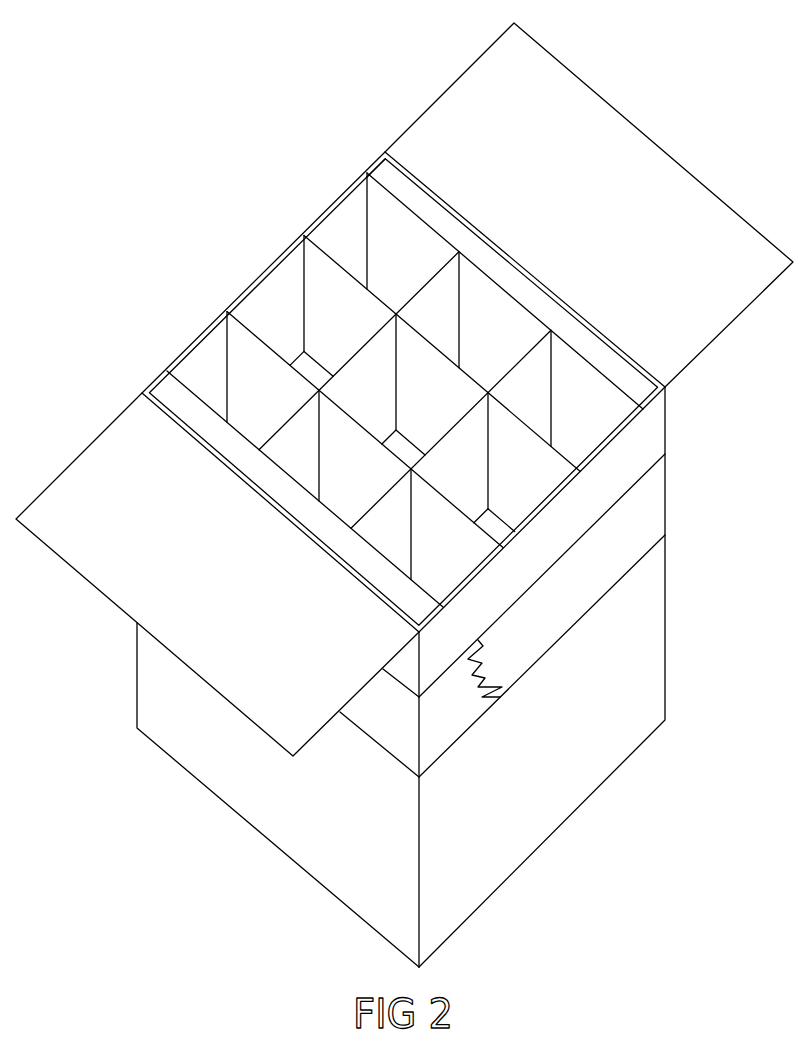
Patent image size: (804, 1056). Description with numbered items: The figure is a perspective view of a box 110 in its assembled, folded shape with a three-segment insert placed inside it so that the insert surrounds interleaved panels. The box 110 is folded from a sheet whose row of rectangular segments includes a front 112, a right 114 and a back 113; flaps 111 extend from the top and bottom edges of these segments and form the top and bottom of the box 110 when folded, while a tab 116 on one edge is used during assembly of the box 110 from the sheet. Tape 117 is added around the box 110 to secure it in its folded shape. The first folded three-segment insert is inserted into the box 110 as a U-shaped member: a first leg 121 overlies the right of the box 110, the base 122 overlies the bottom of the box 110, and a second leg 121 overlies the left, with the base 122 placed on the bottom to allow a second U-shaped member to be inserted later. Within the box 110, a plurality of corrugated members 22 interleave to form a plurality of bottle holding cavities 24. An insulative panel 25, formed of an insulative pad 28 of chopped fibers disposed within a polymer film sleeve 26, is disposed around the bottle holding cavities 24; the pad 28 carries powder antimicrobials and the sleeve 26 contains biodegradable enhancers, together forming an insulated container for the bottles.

The box 110 is at (404, 495).
The flaps 111 is at (607, 217).
The front 112 is at (559, 761).
The back 113 is at (419, 418).
The right 114 is at (295, 803).
The tab 116 is at (408, 612).
The tape 117 is at (563, 630).
The leg 121 is at (192, 390).
The base 122 is at (499, 531).
The corrugated members 22 is at (637, 385).
The bottle holding cavities 24 is at (590, 426).
The insulative panel 25 is at (388, 172).
The polymer film sleeve 26 is at (417, 190).
The insulative pad 28 is at (368, 170).